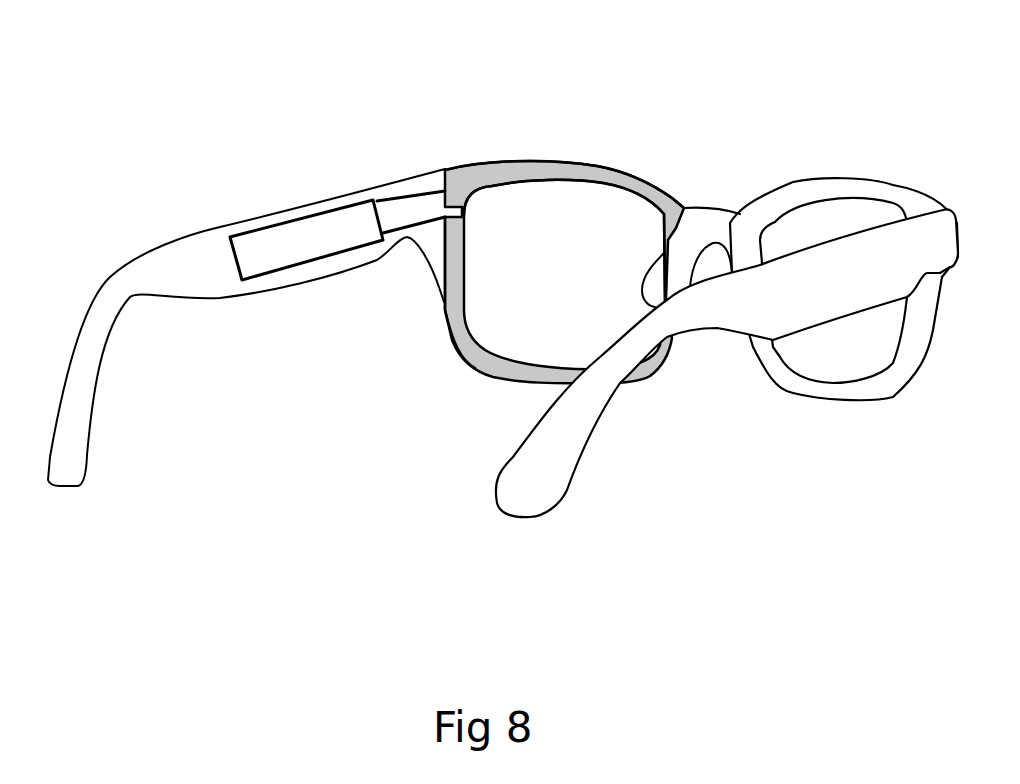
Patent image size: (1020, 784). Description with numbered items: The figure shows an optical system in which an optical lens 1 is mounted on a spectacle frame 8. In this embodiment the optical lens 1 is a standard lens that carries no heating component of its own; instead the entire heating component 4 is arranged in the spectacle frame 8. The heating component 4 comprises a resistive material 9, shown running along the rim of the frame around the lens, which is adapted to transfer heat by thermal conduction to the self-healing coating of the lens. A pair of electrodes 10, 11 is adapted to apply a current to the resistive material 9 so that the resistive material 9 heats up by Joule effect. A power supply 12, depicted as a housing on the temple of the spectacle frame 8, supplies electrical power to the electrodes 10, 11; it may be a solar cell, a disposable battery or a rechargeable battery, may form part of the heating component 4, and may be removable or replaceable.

The optical lens 1 is at (617, 227).
The heating component 4 is at (476, 141).
The spectacle frame 8 is at (897, 200).
The resistive material 9 is at (607, 173).
The electrode 10 is at (400, 205).
The electrode 11 is at (447, 258).
The power supply 12 is at (335, 232).